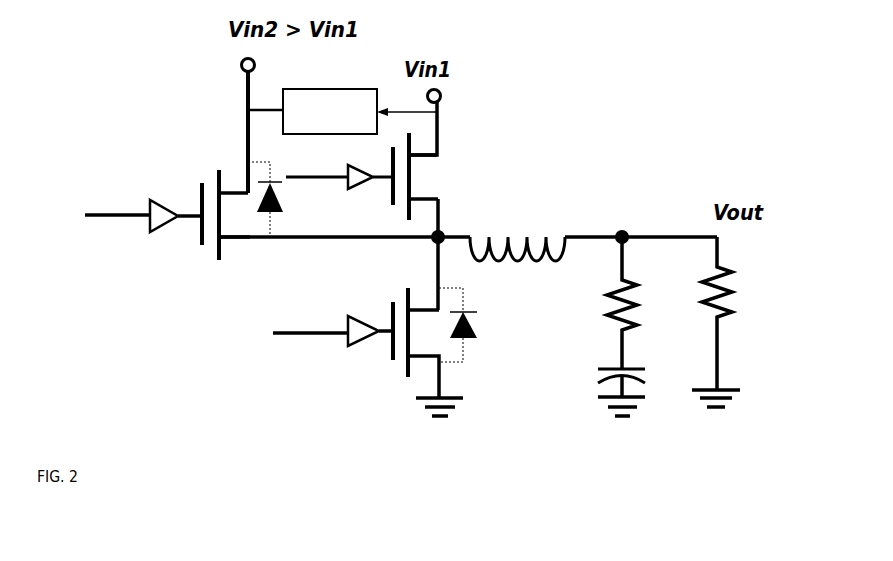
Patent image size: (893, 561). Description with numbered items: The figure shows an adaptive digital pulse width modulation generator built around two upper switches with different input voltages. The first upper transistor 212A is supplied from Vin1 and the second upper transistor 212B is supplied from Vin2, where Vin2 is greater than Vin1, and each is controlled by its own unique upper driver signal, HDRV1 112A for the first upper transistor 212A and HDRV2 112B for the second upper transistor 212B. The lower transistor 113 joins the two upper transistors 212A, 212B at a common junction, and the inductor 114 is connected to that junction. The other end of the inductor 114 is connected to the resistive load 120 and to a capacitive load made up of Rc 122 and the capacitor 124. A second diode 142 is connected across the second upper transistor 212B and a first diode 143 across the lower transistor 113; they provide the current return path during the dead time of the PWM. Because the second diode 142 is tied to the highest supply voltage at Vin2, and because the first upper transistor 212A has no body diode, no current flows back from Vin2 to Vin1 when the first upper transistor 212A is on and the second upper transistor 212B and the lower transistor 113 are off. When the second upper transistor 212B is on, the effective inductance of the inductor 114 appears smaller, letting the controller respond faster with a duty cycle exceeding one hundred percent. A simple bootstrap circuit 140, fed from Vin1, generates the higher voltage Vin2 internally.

The upper driver signal HDRV1 112A is at (261, 250).
The upper driver signal HDRV2 112B is at (122, 205).
The transistor Q3 113 is at (384, 352).
The inductor 114 is at (518, 231).
The resistive load 120 is at (747, 322).
The Rc 122 is at (596, 303).
The capacitor 124 is at (602, 390).
The bootstrap circuit 140 is at (342, 111).
The diode D2 142 is at (313, 199).
The diode D1 143 is at (483, 330).
The transistor Q1 212A is at (475, 176).
The transistor Q2 212B is at (266, 224).